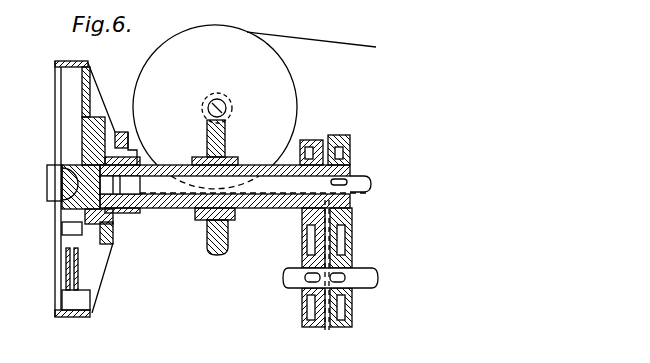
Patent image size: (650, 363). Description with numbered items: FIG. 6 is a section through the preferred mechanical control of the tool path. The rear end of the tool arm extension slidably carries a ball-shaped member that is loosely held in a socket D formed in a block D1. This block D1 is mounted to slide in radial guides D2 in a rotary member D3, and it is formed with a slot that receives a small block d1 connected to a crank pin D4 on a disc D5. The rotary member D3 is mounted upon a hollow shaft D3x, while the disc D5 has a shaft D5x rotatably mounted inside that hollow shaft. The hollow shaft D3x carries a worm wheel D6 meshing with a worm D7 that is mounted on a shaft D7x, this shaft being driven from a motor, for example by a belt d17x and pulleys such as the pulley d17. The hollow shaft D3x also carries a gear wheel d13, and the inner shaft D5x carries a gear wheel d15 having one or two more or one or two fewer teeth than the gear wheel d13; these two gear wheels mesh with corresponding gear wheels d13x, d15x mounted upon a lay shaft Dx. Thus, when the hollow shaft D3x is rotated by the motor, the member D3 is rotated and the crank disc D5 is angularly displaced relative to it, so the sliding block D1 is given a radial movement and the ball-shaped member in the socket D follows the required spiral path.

The socket D is at (67, 183).
The block D1 is at (67, 160).
The radial guides D2 is at (68, 104).
The rotary member D3 is at (88, 97).
The crank pin D4 is at (108, 256).
The disc D5 is at (107, 240).
The worm wheel D6 is at (228, 141).
The worm D7 is at (226, 108).
The shaft D7x is at (209, 113).
The hollow shaft D3x is at (253, 167).
The shaft D5x is at (285, 191).
The lay shaft Dx is at (355, 284).
The small block d1 is at (83, 237).
The gear wheel d13 is at (320, 140).
The gear wheel d15 is at (347, 135).
The gear wheel d13x is at (315, 250).
The gear wheel d15x is at (342, 247).
The pulley d17 is at (160, 62).
The belt d17x is at (311, 28).